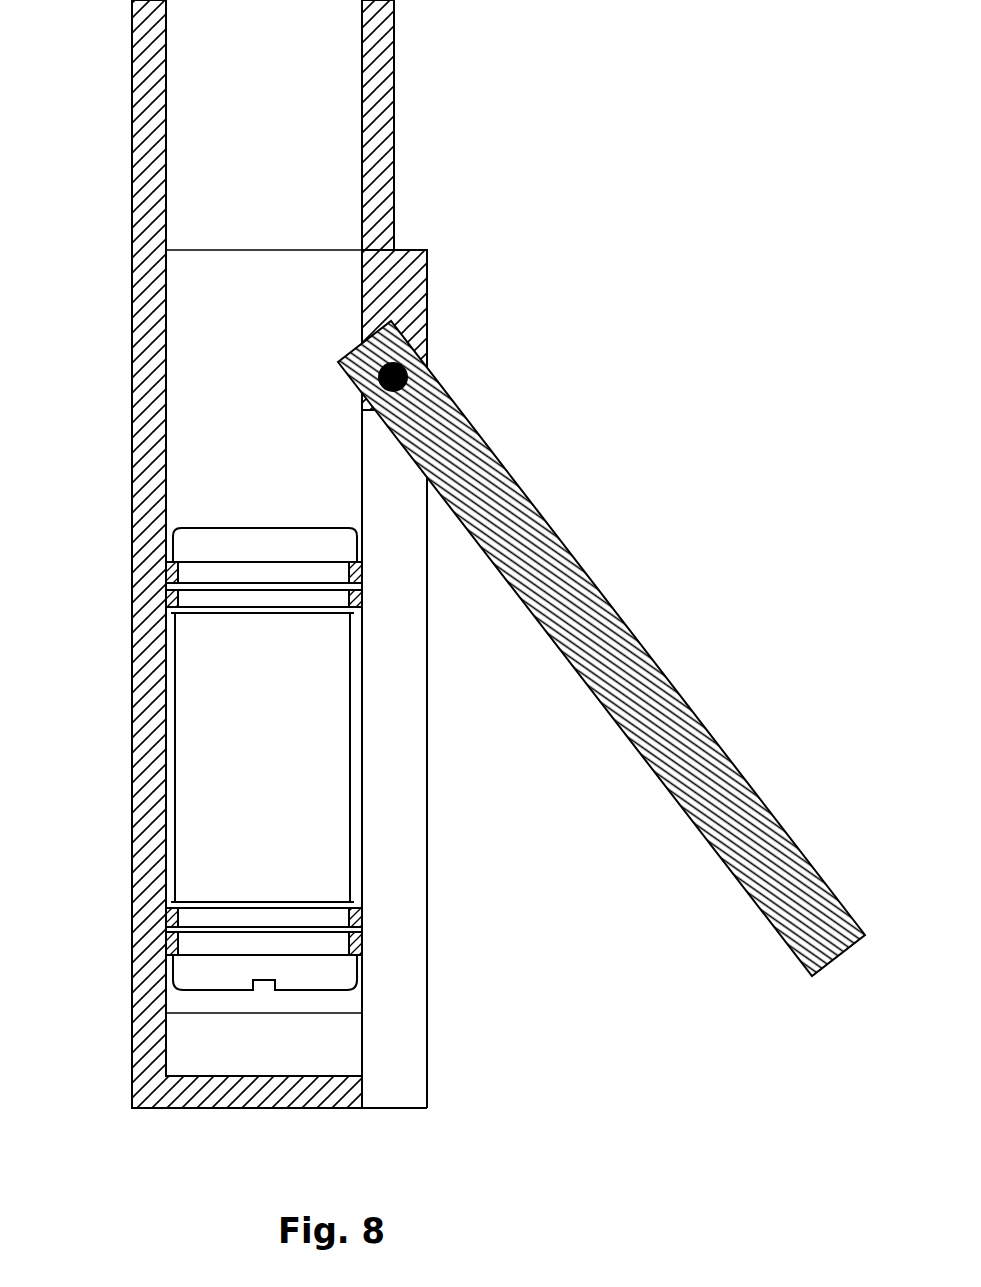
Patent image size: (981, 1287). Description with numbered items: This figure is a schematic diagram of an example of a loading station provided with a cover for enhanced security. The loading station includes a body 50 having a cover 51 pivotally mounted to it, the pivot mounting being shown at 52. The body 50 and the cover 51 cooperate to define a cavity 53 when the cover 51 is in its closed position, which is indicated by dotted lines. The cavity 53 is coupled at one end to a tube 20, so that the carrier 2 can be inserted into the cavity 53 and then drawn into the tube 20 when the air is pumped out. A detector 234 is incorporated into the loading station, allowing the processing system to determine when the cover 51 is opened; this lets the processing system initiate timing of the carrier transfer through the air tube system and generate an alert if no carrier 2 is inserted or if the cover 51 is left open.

The carrier 2 is at (272, 771).
The tube 20 is at (279, 121).
The detector 234 is at (264, 1040).
The body 50 is at (132, 678).
The cover 51 is at (633, 621).
The pivot mounting 52 is at (428, 357).
The cavity 53 is at (225, 473).